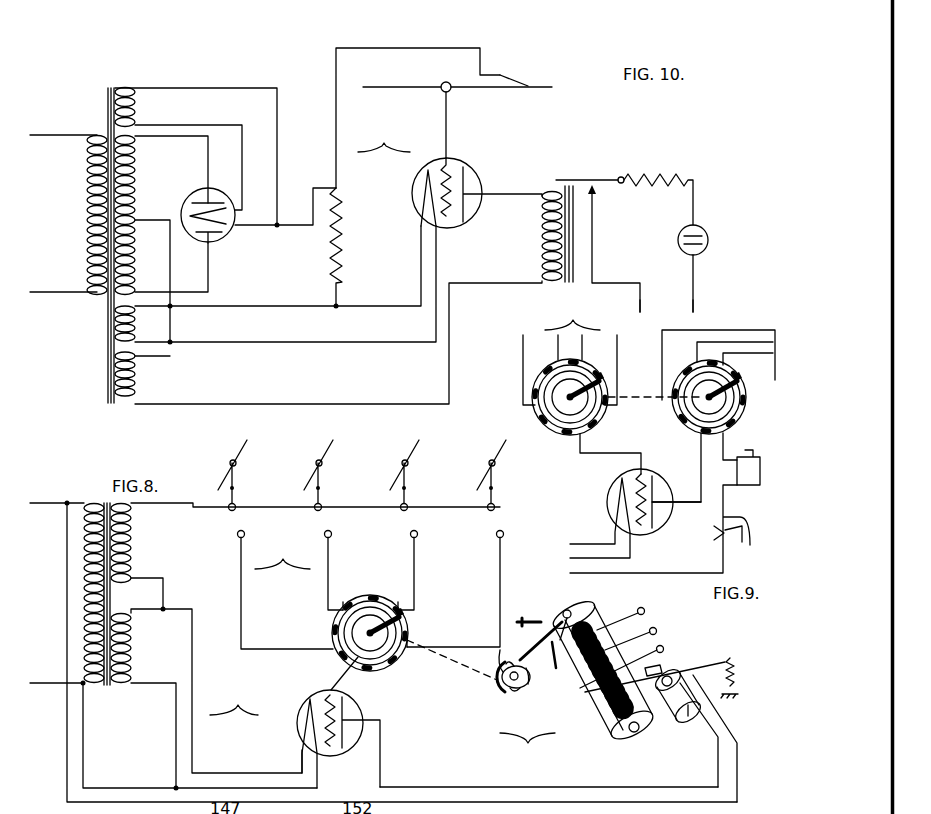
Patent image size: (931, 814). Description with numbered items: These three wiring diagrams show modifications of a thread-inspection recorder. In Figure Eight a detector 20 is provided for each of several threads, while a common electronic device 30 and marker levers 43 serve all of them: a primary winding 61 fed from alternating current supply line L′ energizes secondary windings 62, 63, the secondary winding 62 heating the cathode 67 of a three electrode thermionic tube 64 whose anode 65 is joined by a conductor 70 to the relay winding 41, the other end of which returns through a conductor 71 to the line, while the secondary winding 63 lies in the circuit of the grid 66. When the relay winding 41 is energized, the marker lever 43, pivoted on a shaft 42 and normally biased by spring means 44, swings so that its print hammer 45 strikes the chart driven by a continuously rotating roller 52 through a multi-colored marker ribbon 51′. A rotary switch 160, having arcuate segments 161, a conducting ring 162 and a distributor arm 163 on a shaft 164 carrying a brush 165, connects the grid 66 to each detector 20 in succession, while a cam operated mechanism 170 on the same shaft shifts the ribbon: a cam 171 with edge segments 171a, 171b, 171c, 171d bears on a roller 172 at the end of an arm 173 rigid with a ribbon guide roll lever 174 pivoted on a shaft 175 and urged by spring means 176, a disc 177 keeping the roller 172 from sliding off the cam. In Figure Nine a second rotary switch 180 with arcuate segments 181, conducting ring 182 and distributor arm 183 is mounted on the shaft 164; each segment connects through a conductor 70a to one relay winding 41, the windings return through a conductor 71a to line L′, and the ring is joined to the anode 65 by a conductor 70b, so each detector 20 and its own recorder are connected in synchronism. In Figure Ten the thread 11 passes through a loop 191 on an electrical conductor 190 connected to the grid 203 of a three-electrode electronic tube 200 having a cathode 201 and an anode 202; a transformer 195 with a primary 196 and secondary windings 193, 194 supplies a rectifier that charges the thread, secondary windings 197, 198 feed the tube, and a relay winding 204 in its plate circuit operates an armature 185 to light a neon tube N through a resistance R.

In FIG. 10, the thread 11 is at (536, 88).
In FIG. 8, the detector 20 is at (234, 490).
In FIG. 8, the electronic device 30 is at (286, 720).
In FIG. 10, the relay winding 41 is at (751, 486).
In FIG. 9, the relay winding 41 is at (676, 720).
In FIG. 9, the shaft 42 is at (696, 660).
In FIG. 9, the marker lever 43 is at (656, 631).
In FIG. 9, the spring means 44 is at (733, 664).
In FIG. 9, the print hammer 45 is at (664, 652).
In FIG. 9, the multi-colored marker ribbon 51′ is at (592, 612).
In FIG. 9, the continuously rotating roller 52 is at (634, 738).
In FIG. 8, the primary winding 61 is at (84, 585).
In FIG. 8, the secondary winding 62 is at (133, 652).
In FIG. 8, the secondary winding 63 is at (133, 548).
In FIG. 10, the three electrode thermionic tube 64 is at (612, 510).
In FIG. 10, the anode 65 is at (644, 532).
In FIG. 8, the anode 65 is at (342, 750).
In FIG. 10, the grid 66 is at (638, 474).
In FIG. 8, the grid 66 is at (328, 692).
In FIG. 10, the cathode 67 is at (624, 498).
In FIG. 8, the cathode 67 is at (310, 727).
In FIG. 8, the conductor 70 is at (428, 782).
In FIG. 10, the conductor 70a is at (732, 434).
In FIG. 10, the conductor 70b is at (720, 532).
In FIG. 8, the conductor 71 is at (457, 802).
In FIG. 10, the conductor 71a is at (730, 546).
In FIG. 10, the rotary switch 160 is at (570, 367).
In FIG. 8, the rotary switch 160 is at (331, 605).
In FIG. 10, the arcuate segments 161 is at (533, 397).
In FIG. 8, the arcuate segments 161 is at (333, 628).
In FIG. 10, the conducting ring 162 is at (562, 430).
In FIG. 8, the conducting ring 162 is at (380, 670).
In FIG. 10, the distributor arm 163 is at (580, 368).
In FIG. 8, the distributor arm 163 is at (388, 606).
In FIG. 10, the shaft 164 is at (560, 368).
In FIG. 8, the shaft 164 is at (356, 606).
In FIG. 10, the brush 165 is at (602, 382).
In FIG. 8, the brush 165 is at (400, 630).
In FIG. 10, the cam operated mechanism 170 is at (384, 136).
In FIG. 9, the cam operated mechanism 170 is at (527, 746).
In FIG. 10, the cam 171 is at (378, 50).
In FIG. 9, the cam 171 is at (504, 686).
In FIG. 9, the edge segment 171a is at (530, 686).
In FIG. 9, the edge segment 171b is at (512, 689).
In FIG. 9, the edge segment 171c is at (500, 677).
In FIG. 9, the edge segment 171d is at (508, 665).
In FIG. 10, the roller 172 is at (512, 80).
In FIG. 8, the roller 172 is at (500, 616).
In FIG. 9, the arm 173 is at (538, 640).
In FIG. 9, the ribbon guide roll lever 174 is at (566, 610).
In FIG. 9, the shaft 175 is at (556, 668).
In FIG. 9, the spring means 176 is at (528, 618).
In FIG. 9, the disc 177 is at (500, 650).
In FIG. 10, the rotary switch 180 is at (688, 372).
In FIG. 10, the arcuate segments 181 is at (673, 399).
In FIG. 10, the conducting ring 182 is at (690, 424).
In FIG. 10, the distributor arm 183 is at (735, 368).
In FIG. 10, the armature 185 is at (572, 180).
In FIG. 10, the electrical conductor 190 is at (448, 114).
In FIG. 10, the loop 191 is at (442, 83).
In FIG. 10, the secondary winding 193 is at (135, 176).
In FIG. 10, the secondary winding 194 is at (136, 107).
In FIG. 10, the transformer 195 is at (106, 322).
In FIG. 10, the primary 196 is at (86, 205).
In FIG. 10, the secondary winding 197 is at (135, 318).
In FIG. 10, the secondary winding 198 is at (135, 372).
In FIG. 10, the three-electrode electronic tube 200 is at (480, 208).
In FIG. 10, the cathode 201 is at (424, 196).
In FIG. 10, the anode 202 is at (466, 184).
In FIG. 10, the grid 203 is at (450, 166).
In FIG. 10, the relay winding 204 is at (541, 252).
In FIG. 10, the resistance R is at (660, 174).
In FIG. 10, the neon tube N is at (708, 240).
In FIG. 10, the alternating current supply line L′ is at (42, 135).
In FIG. 8, the alternating current supply line L′ is at (33, 503).